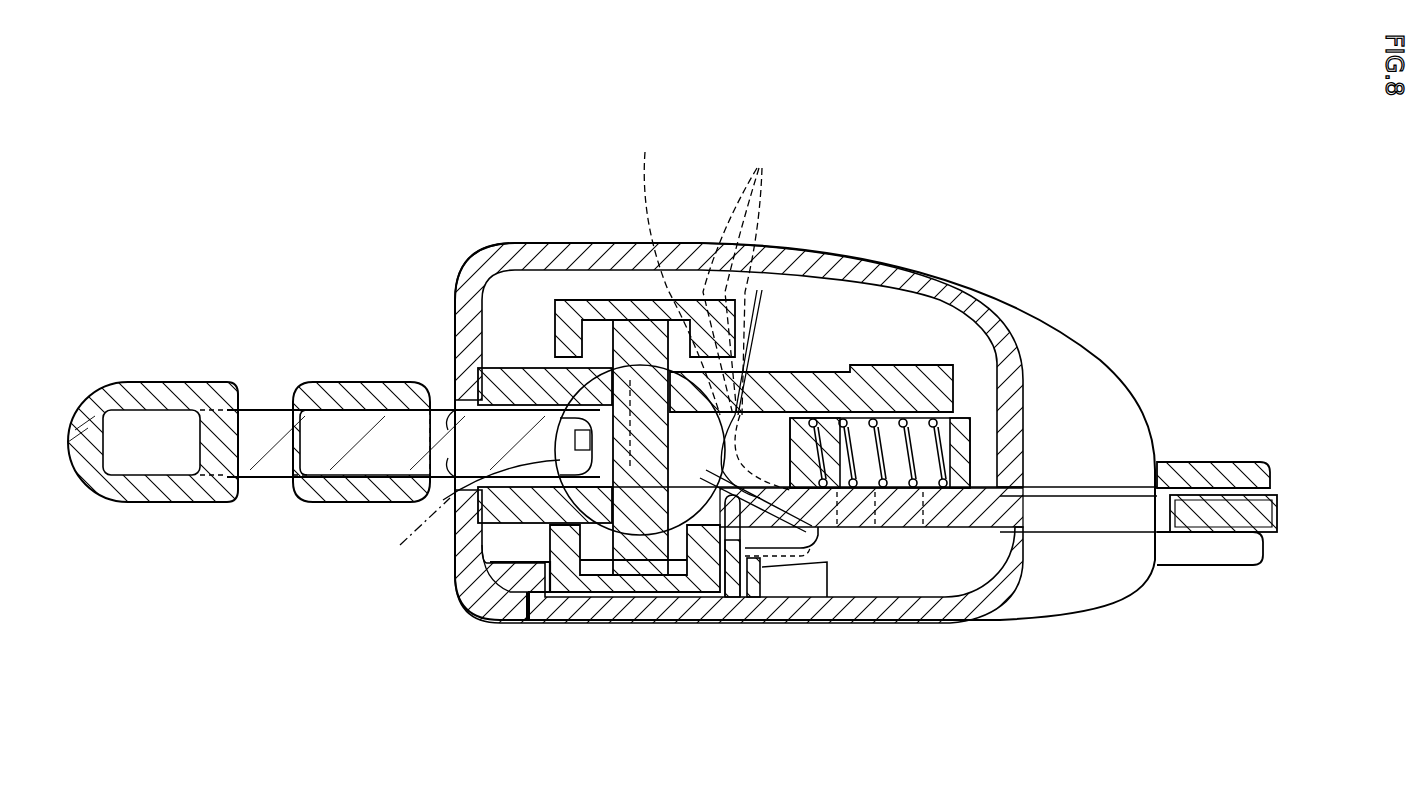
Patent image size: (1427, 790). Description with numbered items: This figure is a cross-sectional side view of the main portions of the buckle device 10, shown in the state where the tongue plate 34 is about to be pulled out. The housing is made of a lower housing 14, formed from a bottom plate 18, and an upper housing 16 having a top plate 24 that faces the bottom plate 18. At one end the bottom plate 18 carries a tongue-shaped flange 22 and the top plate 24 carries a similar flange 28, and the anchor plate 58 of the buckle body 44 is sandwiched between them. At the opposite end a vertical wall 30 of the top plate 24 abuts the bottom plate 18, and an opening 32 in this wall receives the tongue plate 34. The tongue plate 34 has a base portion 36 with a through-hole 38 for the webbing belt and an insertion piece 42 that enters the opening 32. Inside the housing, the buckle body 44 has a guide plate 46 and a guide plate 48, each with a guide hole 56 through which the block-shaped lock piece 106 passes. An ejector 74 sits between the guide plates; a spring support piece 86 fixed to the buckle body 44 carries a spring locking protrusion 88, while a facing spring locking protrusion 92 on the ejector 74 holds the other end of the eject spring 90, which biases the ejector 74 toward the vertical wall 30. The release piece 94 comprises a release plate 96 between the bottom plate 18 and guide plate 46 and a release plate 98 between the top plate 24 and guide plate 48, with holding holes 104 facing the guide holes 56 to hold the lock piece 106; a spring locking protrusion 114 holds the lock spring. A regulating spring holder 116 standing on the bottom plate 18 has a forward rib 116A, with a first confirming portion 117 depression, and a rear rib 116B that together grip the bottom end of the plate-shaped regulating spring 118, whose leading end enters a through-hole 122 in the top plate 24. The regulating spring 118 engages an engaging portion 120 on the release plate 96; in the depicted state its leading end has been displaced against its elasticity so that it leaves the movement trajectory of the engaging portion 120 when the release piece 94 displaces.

The buckle device 10 is at (476, 128).
The lower housing 14 is at (870, 624).
The upper housing 16 is at (920, 272).
The bottom plate 18 is at (790, 606).
The flange 22 is at (1243, 560).
The top plate 24 is at (838, 262).
The flange 28 is at (1195, 462).
The vertical wall 30 is at (462, 266).
The opening 32 is at (443, 430).
The tongue plate 34 is at (334, 380).
The base portion 36 is at (172, 383).
The through-hole 38 is at (230, 430).
The insertion piece 42 is at (425, 505).
The buckle body 44 is at (960, 529).
The guide plate 46 is at (485, 525).
The guide plate 48 is at (480, 378).
The guide hole 56 is at (612, 372).
The anchor plate 58 is at (1280, 500).
The ejector 74 is at (800, 418).
The spring support piece 86 is at (960, 440).
The spring locking protrusion 88 is at (870, 425).
The eject spring 90 is at (950, 465).
The spring locking protrusion 92 is at (830, 579).
The release piece 94 is at (569, 302).
The release plate 96 is at (622, 292).
The release plate 98 is at (500, 590).
The holding hole 104 is at (680, 292).
The lock piece 106 is at (615, 585).
The spring locking protrusion 114 is at (445, 502).
The regulating spring holder 116 is at (797, 569).
The forward rib 116A is at (735, 598).
The rear rib 116B is at (753, 600).
The first confirming portion 117 is at (733, 600).
The regulating spring 118 is at (746, 275).
The engaging portion 120 is at (729, 315).
The through-hole 122 is at (673, 269).